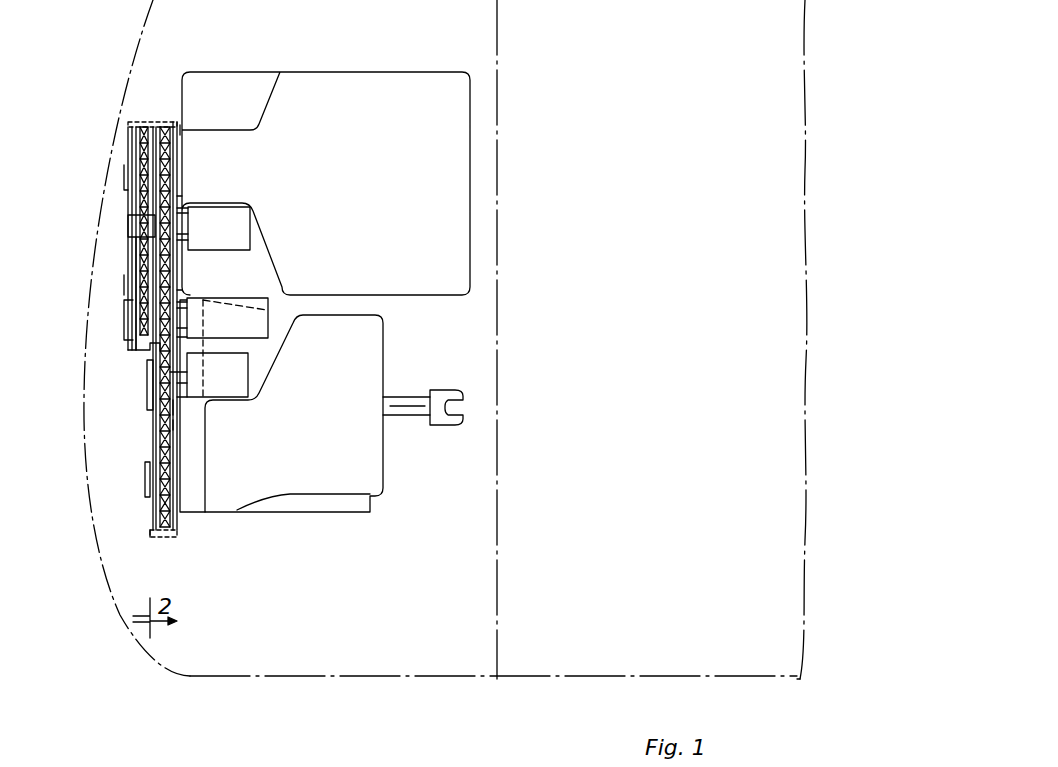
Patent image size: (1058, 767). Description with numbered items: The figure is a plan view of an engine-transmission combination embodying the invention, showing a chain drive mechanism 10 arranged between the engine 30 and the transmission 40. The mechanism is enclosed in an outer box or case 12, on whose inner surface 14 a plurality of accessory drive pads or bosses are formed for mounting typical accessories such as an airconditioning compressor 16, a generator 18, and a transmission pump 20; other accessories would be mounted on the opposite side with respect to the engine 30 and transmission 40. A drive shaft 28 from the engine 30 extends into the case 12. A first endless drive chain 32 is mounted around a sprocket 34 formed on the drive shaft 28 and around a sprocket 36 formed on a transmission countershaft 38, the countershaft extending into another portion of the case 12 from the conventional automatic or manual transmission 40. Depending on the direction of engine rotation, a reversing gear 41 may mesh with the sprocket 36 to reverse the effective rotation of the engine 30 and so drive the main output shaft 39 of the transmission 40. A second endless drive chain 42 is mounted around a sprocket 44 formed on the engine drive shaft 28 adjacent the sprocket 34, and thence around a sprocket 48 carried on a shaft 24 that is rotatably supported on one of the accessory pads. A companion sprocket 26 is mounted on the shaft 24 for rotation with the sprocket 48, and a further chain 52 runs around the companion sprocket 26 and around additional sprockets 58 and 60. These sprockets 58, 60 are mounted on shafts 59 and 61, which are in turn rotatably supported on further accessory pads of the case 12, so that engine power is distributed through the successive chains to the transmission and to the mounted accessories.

The chain drive mechanism 10 is at (138, 118).
The outer box or case 12 is at (127, 202).
The inner surface 14 is at (128, 283).
The airconditioning compressor 16 is at (238, 215).
The generator 18 is at (253, 302).
The transmission pump 20 is at (242, 390).
The shaft 24 is at (125, 318).
The companion sprocket 26 is at (182, 290).
The drive shaft 28 is at (126, 175).
The engine 30 is at (378, 92).
The first endless drive chain 32 is at (153, 417).
The sprocket 34 is at (180, 132).
The sprocket 36 is at (152, 515).
The transmission countershaft 38 is at (150, 478).
The main output shaft 39 is at (175, 408).
The transmission 40 is at (350, 347).
The reversing gear 41 is at (170, 423).
The second endless drive chain 42 is at (140, 253).
The sprocket 44 is at (138, 137).
The sprocket 48 is at (128, 342).
The chain 52 is at (167, 348).
The sprocket 58 is at (168, 370).
The shaft 59 is at (148, 375).
The sprocket 60 is at (182, 198).
The shaft 61 is at (138, 228).